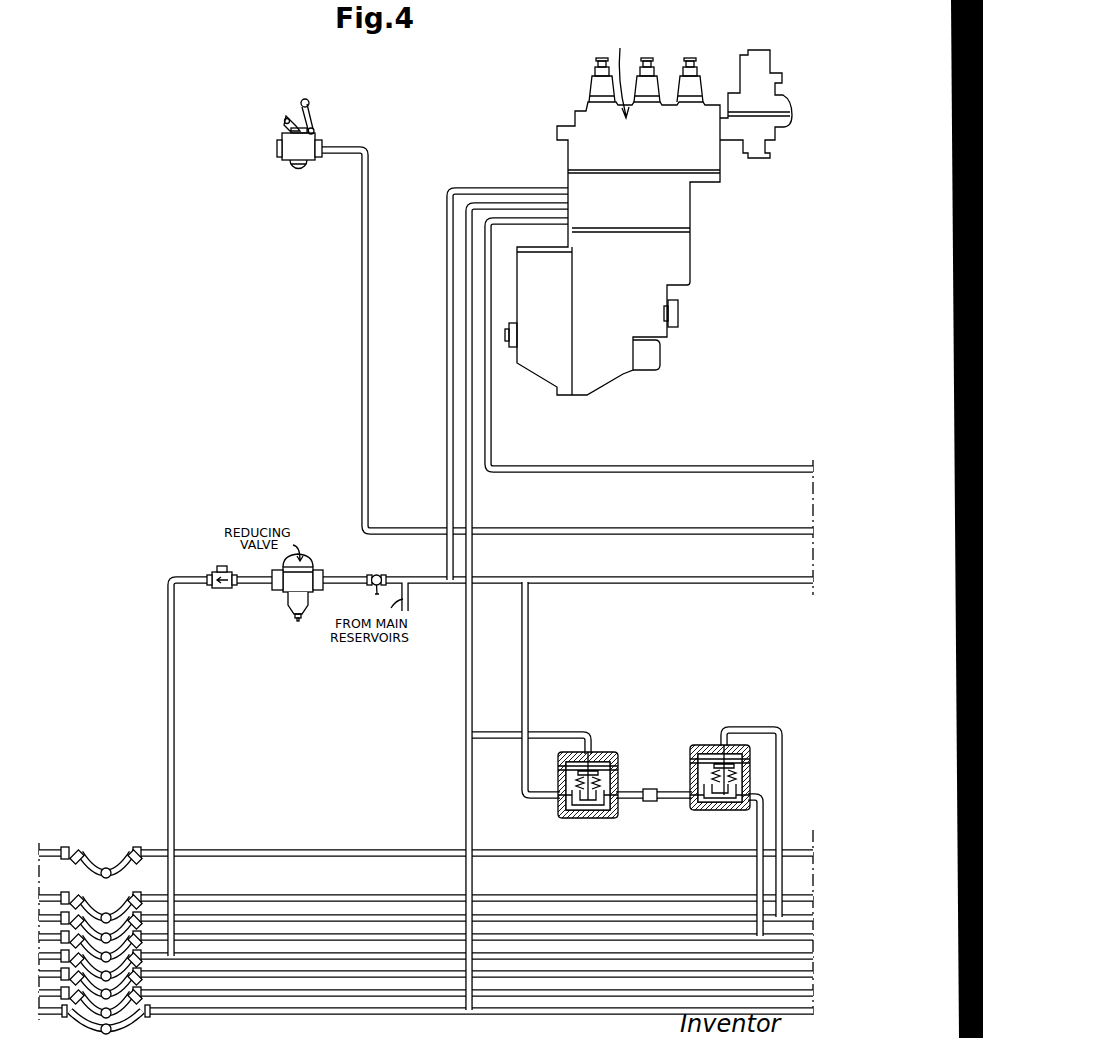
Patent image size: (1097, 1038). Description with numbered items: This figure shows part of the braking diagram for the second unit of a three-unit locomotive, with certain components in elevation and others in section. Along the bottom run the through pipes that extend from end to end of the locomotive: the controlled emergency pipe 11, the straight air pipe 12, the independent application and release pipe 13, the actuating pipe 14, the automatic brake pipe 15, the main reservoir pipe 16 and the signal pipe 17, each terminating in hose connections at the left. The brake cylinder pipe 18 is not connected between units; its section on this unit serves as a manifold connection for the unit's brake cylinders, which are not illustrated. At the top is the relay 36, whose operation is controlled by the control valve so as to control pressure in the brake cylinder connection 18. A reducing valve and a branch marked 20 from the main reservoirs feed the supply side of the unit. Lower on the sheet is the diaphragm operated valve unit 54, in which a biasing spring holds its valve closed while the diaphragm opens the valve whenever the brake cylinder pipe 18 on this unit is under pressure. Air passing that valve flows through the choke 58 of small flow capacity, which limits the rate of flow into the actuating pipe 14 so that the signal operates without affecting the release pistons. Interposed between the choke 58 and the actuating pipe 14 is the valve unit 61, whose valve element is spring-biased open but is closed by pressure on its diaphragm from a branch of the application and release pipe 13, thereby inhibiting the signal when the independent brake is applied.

The controlled emergency pipe 11 is at (268, 852).
The straight air pipe 12 is at (272, 898).
The independent application and release pipe 13 is at (306, 917).
The actuating pipe 14 is at (341, 936).
The automatic brake pipe 15 is at (373, 955).
The main reservoir pipe 16 is at (396, 974).
The signal pipe 17 is at (416, 992).
The brake cylinder pipe 18 is at (420, 1012).
The pipe from main reservoirs 20 is at (409, 597).
The relay 36 is at (648, 211).
The diaphragm operated valve unit 54 is at (602, 752).
The choke 58 is at (651, 789).
The valve unit 61 is at (710, 741).